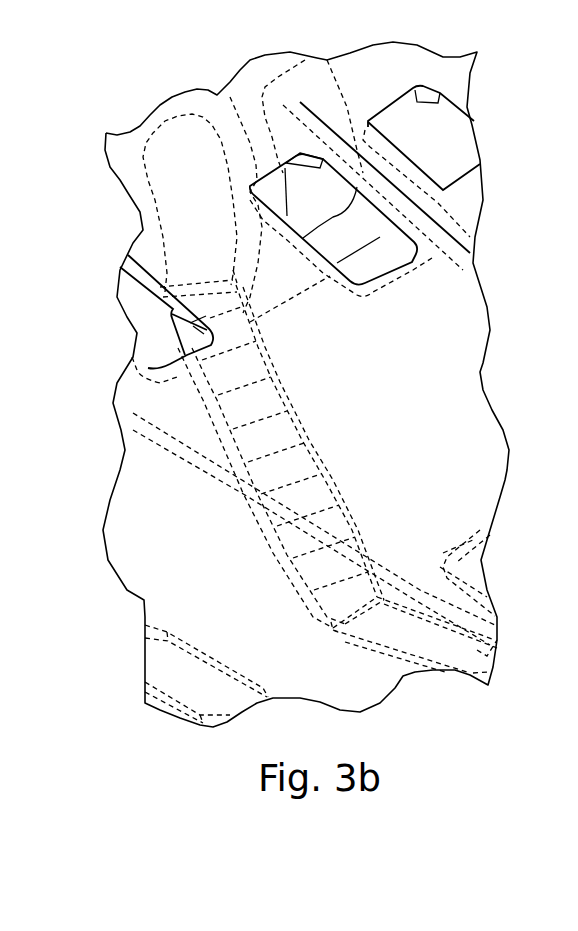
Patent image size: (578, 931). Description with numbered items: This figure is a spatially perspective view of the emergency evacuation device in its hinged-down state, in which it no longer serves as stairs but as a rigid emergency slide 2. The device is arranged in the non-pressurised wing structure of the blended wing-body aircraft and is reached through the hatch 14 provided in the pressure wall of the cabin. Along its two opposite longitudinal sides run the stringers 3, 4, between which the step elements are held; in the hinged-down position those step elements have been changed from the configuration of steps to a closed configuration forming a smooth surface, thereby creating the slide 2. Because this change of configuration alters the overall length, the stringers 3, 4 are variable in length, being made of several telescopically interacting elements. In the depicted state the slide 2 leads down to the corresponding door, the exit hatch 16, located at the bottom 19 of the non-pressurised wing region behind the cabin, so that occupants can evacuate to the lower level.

The slide 2 is at (323, 452).
The stringer 3 is at (240, 480).
The stringer 4 is at (307, 420).
The hatch 14 is at (183, 180).
The exit hatch 16 is at (453, 663).
The bottom 19 is at (350, 691).